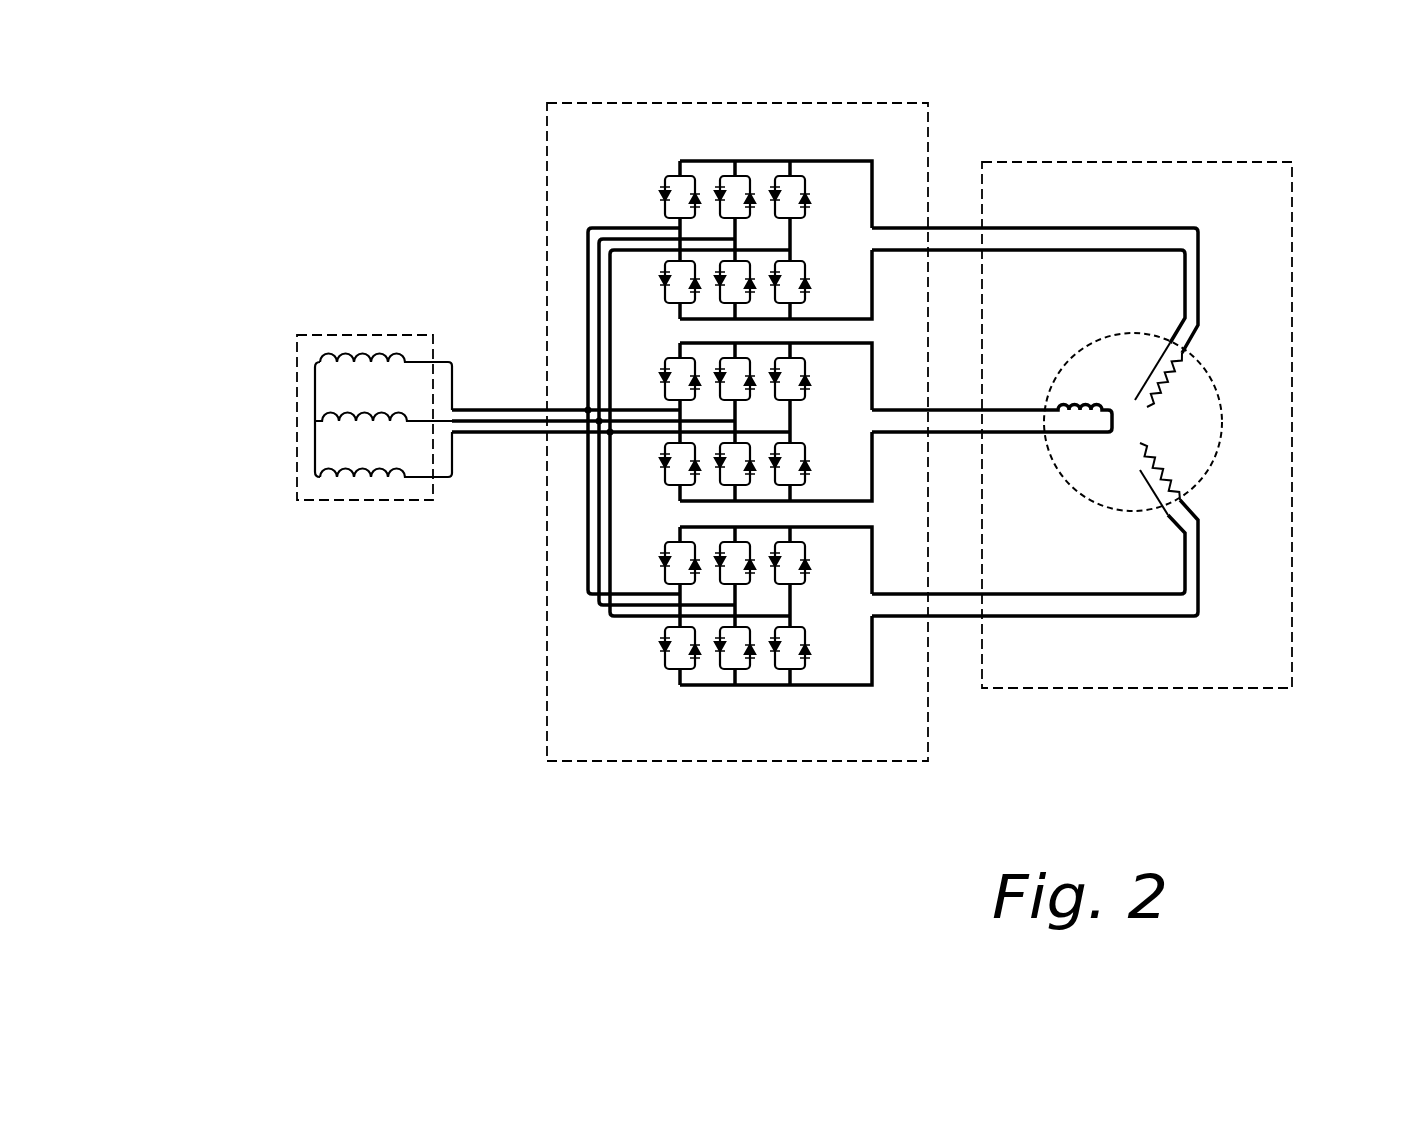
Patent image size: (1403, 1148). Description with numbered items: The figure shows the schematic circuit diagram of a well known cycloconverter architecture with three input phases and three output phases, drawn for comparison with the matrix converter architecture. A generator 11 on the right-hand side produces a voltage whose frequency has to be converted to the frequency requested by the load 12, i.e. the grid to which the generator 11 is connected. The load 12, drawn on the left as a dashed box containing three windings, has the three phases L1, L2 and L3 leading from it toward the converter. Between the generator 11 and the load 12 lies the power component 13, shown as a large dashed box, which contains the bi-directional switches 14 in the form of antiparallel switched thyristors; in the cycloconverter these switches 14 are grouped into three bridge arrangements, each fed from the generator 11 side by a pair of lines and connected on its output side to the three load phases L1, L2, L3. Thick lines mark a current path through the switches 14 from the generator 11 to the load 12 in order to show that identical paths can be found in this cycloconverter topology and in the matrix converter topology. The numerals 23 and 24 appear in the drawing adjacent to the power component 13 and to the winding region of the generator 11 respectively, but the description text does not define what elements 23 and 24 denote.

The generator 11 is at (1122, 463).
The load 12 is at (362, 465).
The power component 13 is at (808, 471).
The bi-directional switches 14 is at (640, 172).
The power generation system 23 is at (493, 637).
The generator winding 24 is at (1177, 392).
The load phase L1 is at (337, 383).
The load phase L2 is at (290, 422).
The load phase L3 is at (330, 518).